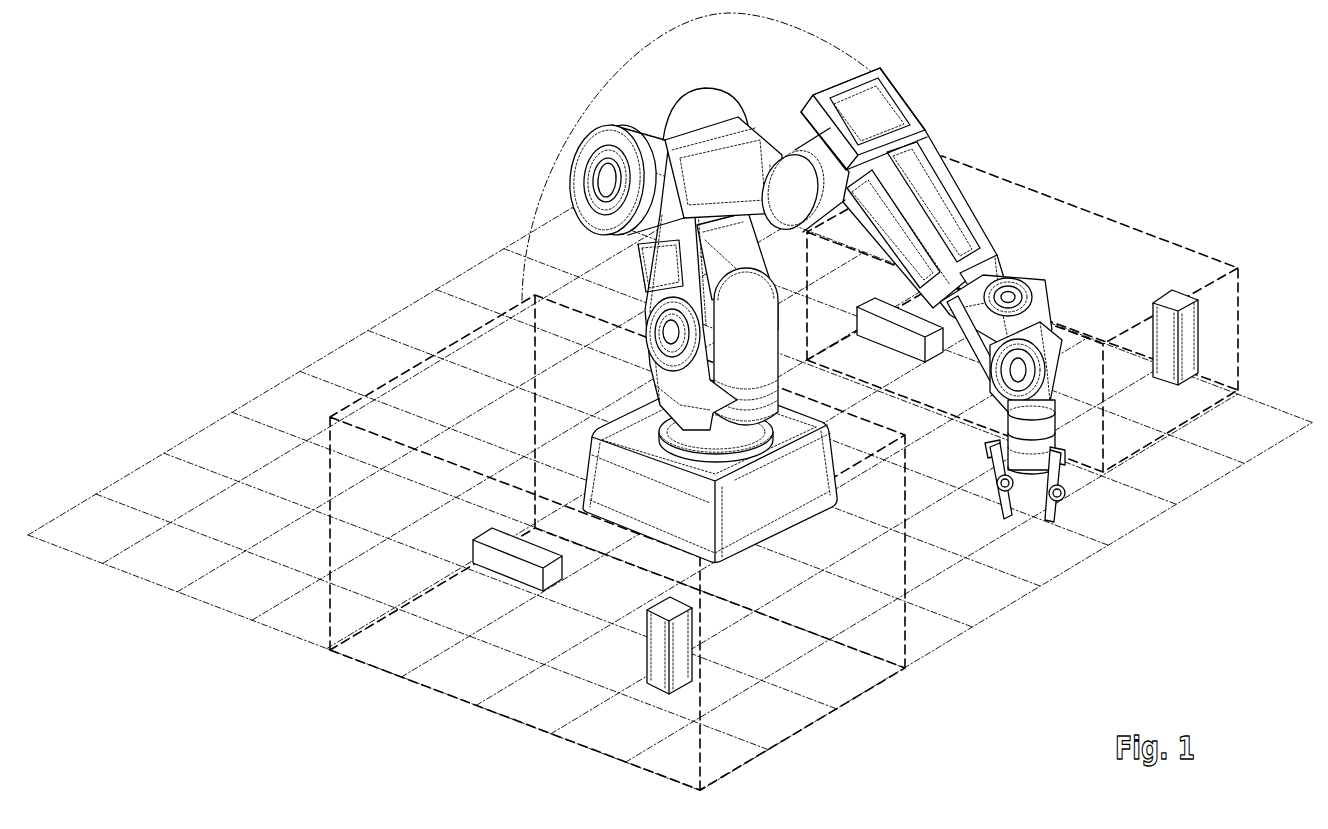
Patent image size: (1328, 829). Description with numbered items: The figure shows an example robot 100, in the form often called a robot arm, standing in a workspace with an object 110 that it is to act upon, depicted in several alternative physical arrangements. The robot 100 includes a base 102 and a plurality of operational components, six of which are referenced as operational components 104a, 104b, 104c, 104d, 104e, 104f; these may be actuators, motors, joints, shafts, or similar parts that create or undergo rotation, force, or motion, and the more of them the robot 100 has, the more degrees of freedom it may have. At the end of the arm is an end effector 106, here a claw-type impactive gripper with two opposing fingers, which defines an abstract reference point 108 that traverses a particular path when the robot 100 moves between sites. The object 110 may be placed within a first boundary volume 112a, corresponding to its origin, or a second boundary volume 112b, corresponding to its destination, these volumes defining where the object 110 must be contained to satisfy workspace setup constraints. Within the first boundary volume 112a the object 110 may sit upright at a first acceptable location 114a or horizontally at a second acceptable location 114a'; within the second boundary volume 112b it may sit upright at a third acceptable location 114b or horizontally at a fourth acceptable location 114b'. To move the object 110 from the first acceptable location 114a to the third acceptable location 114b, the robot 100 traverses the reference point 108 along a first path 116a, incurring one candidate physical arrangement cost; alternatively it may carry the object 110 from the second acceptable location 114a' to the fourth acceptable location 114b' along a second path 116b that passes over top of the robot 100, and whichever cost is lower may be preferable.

The robot 100 is at (528, 95).
The base 102 is at (803, 487).
The operational component 104a is at (1063, 402).
The operational component 104b is at (1018, 373).
The operational component 104c is at (1011, 300).
The operational component 104d is at (787, 197).
The operational component 104e is at (674, 334).
The operational component 104f is at (688, 430).
The end effector 106 is at (1040, 462).
The reference point 108 is at (1022, 472).
The object 110 is at (657, 657).
The first boundary volume 112a is at (1053, 230).
The second boundary volume 112b is at (497, 360).
The first acceptable location 114a is at (1222, 411).
The second acceptable location 114a' is at (920, 388).
The third acceptable location 114b is at (574, 729).
The fourth acceptable location 114b' is at (434, 624).
The first path 116a is at (926, 527).
The second path 116b is at (519, 292).